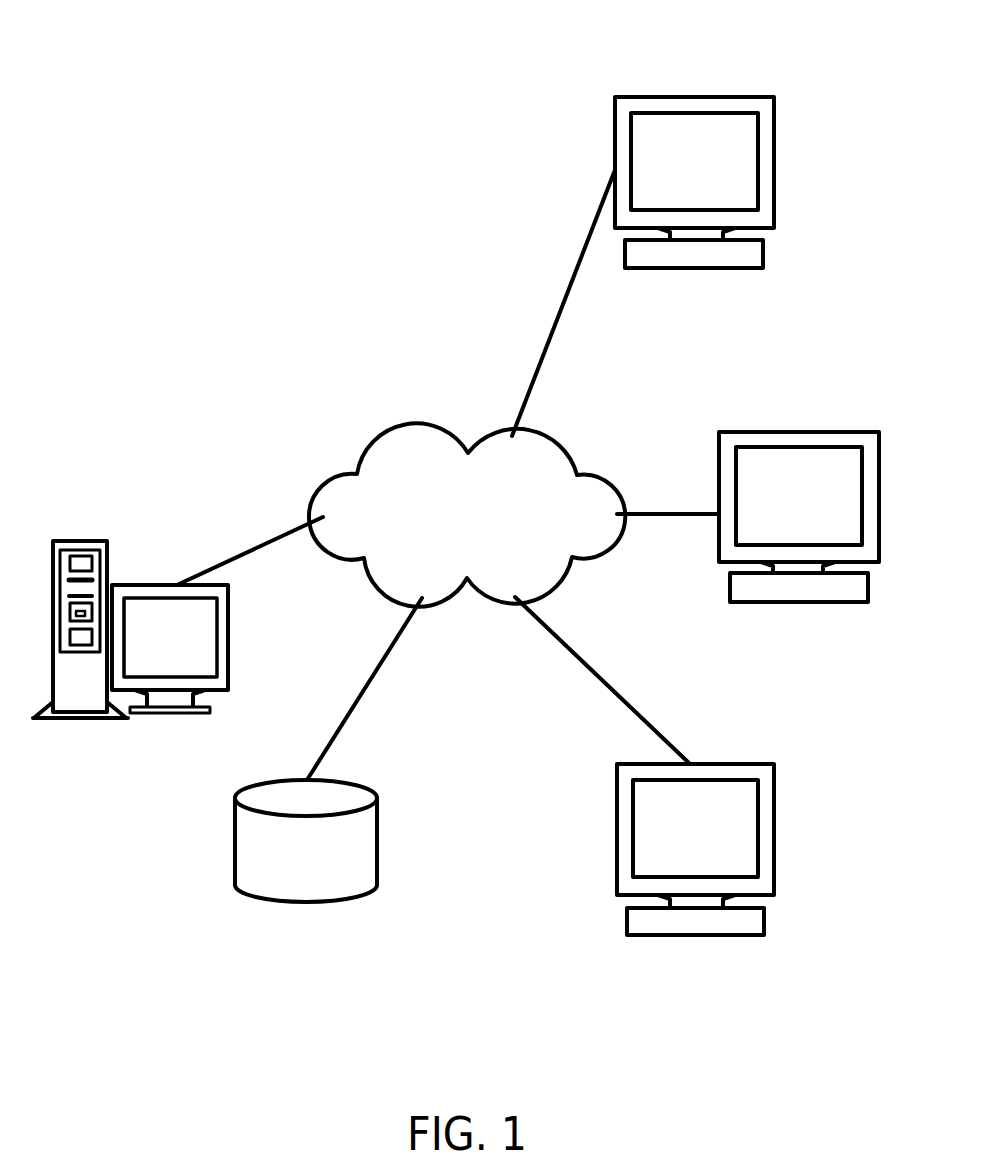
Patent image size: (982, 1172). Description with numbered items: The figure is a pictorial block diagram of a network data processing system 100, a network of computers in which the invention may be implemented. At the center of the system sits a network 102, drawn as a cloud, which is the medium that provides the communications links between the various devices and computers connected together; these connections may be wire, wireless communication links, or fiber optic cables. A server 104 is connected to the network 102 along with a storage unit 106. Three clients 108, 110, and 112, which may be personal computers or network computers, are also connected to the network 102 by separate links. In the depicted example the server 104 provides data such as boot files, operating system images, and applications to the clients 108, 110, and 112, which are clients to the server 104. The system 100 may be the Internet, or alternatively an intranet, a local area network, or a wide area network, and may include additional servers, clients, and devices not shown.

The network data processing system 100 is at (512, 849).
The network 102 is at (417, 449).
The server 104 is at (138, 593).
The storage unit 106 is at (278, 885).
The client 108 is at (668, 105).
The client 110 is at (772, 438).
The client 112 is at (747, 923).